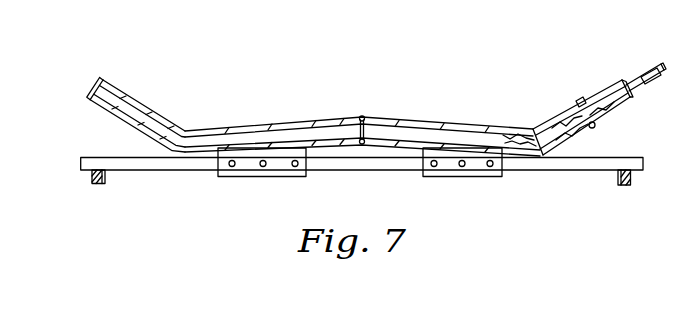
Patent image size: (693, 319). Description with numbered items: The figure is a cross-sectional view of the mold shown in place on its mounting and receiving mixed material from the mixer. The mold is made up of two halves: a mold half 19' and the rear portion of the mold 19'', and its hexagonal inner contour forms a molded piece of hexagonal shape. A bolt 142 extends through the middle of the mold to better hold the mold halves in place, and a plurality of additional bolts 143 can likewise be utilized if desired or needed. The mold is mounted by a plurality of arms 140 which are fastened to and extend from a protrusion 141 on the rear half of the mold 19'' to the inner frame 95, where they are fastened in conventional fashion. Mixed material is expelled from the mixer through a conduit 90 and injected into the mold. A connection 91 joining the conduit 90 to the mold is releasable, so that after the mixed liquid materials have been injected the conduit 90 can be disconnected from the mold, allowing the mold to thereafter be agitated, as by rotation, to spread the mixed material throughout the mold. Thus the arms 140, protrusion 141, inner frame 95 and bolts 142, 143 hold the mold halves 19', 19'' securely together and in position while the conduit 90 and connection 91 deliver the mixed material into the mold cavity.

The mold half 19' is at (362, 116).
The rear portion of the mold 19'' is at (129, 115).
The conduit 90 is at (650, 57).
The connection 91 is at (629, 85).
The inner frame 95 is at (93, 185).
The arms 140 is at (193, 170).
The protrusion 141 is at (278, 177).
The bolt 142 is at (390, 88).
The additional bolts 143 is at (575, 103).